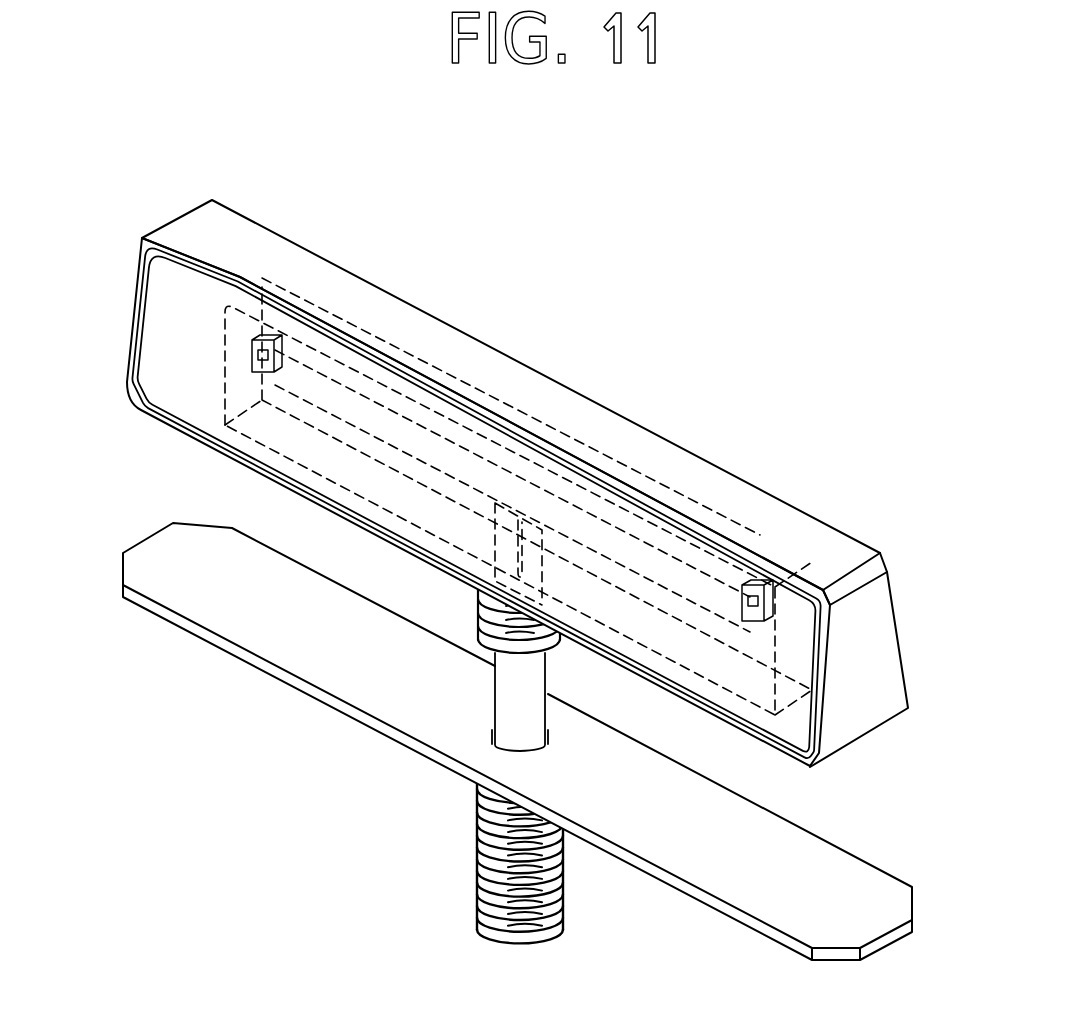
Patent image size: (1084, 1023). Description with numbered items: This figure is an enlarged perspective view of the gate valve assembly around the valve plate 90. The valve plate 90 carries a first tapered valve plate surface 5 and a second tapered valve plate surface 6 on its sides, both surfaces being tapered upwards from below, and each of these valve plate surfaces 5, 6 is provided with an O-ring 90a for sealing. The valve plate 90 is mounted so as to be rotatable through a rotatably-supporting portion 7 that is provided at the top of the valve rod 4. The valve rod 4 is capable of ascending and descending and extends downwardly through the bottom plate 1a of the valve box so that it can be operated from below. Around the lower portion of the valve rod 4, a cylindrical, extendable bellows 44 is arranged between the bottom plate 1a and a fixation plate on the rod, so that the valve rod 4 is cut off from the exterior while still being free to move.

The second tapered valve plate surface 6 is at (257, 226).
The valve plate 90 is at (288, 262).
The first tapered valve plate surface 5 is at (160, 297).
The O-ring 90a is at (165, 417).
The rotatably-supporting portion 7 is at (467, 440).
The valve rod 4 is at (527, 688).
The bottom plate 1a is at (800, 850).
The bellows 44 is at (487, 877).